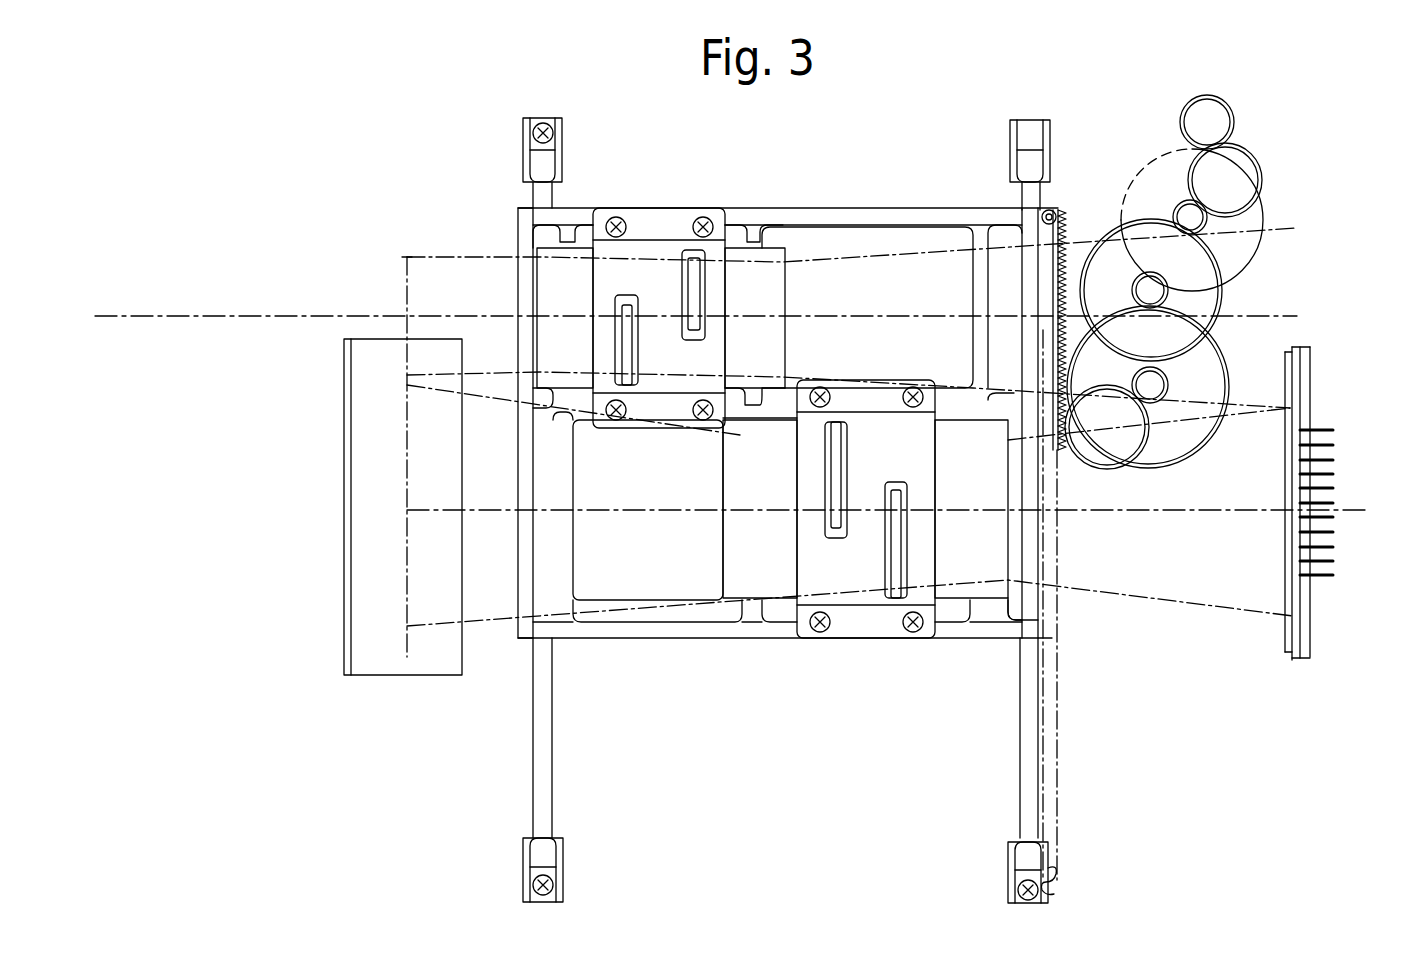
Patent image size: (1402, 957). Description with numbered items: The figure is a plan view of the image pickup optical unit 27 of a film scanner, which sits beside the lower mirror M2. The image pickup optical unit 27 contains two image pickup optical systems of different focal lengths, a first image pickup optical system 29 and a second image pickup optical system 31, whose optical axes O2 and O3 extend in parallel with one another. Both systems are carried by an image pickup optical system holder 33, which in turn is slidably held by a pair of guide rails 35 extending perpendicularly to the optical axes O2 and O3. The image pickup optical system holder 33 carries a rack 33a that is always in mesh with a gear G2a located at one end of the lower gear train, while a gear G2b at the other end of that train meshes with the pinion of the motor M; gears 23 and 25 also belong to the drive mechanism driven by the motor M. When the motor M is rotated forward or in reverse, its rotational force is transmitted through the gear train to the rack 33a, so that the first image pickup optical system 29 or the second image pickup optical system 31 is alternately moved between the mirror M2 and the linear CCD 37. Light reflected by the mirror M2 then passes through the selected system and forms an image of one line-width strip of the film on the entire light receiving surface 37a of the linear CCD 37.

The gear 23 is at (1233, 112).
The gear 25 is at (1255, 165).
The image pickup optical unit 27 is at (502, 143).
The first image pickup optical system 29 is at (753, 616).
The second image pickup optical system 31 is at (793, 224).
The image pickup optical system holder 33 is at (850, 225).
The rack 33a is at (1080, 228).
The guide rails 35 is at (540, 757).
The linear CCD 37 is at (1312, 633).
The light receiving surface 37a is at (1287, 550).
The motor M is at (1262, 222).
The lower mirror M2 is at (370, 517).
The gear G2a is at (1113, 470).
The gear G2b is at (1246, 288).
The optical axis O2 is at (665, 510).
The optical axis O3 is at (880, 317).